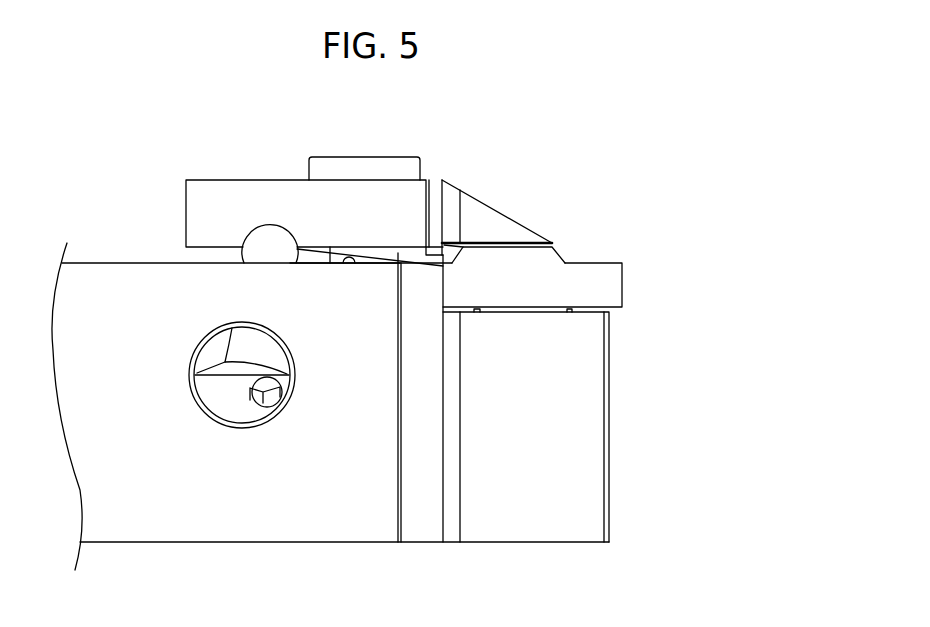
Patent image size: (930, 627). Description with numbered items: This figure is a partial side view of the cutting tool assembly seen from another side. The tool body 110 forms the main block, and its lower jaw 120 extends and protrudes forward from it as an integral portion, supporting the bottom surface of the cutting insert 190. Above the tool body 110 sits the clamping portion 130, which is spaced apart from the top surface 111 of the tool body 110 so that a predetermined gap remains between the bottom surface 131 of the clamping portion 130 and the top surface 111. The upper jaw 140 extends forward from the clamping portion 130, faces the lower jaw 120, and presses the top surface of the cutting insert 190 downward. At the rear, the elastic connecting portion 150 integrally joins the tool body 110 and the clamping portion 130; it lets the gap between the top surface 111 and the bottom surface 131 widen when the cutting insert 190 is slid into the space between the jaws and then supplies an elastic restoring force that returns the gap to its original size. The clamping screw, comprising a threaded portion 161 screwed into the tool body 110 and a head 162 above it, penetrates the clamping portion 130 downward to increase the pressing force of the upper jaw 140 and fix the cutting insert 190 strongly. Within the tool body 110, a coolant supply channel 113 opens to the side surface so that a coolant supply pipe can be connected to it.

The tool body 110 is at (93, 268).
The top surface 111 is at (358, 266).
The coolant supply channel 113 is at (215, 415).
The lower jaw 120 is at (570, 330).
The clamping portion 130 is at (265, 197).
The bottom surface 131 is at (405, 256).
The upper jaw 140 is at (497, 225).
The elastic connecting portion 150 is at (190, 257).
The threaded portion 161 is at (372, 258).
The head 162 is at (400, 167).
The cutting insert 190 is at (583, 252).